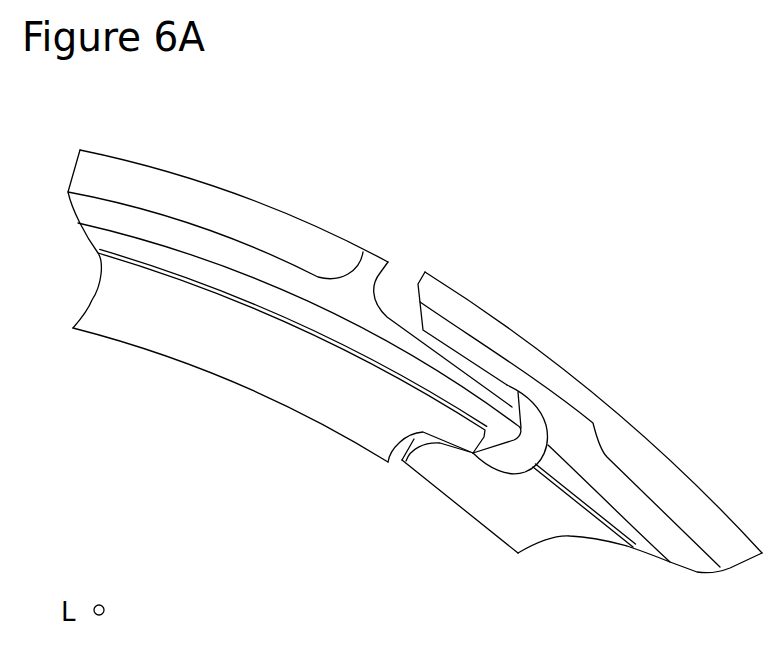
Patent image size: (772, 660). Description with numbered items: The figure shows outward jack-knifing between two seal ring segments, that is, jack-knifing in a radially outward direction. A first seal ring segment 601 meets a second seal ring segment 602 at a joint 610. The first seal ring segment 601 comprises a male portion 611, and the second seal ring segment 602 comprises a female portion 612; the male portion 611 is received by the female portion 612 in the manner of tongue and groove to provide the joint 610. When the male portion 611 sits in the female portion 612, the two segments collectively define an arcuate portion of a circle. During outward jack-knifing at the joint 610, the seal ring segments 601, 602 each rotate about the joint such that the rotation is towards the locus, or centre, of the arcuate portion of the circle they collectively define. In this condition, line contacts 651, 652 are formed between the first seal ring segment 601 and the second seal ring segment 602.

The first seal ring segment 601 is at (302, 220).
The second seal ring segment 602 is at (650, 452).
The joint 610 is at (468, 411).
The male portion 611 is at (365, 343).
The female portion 612 is at (540, 443).
The line contact 651 is at (507, 383).
The line contact 652 is at (470, 452).